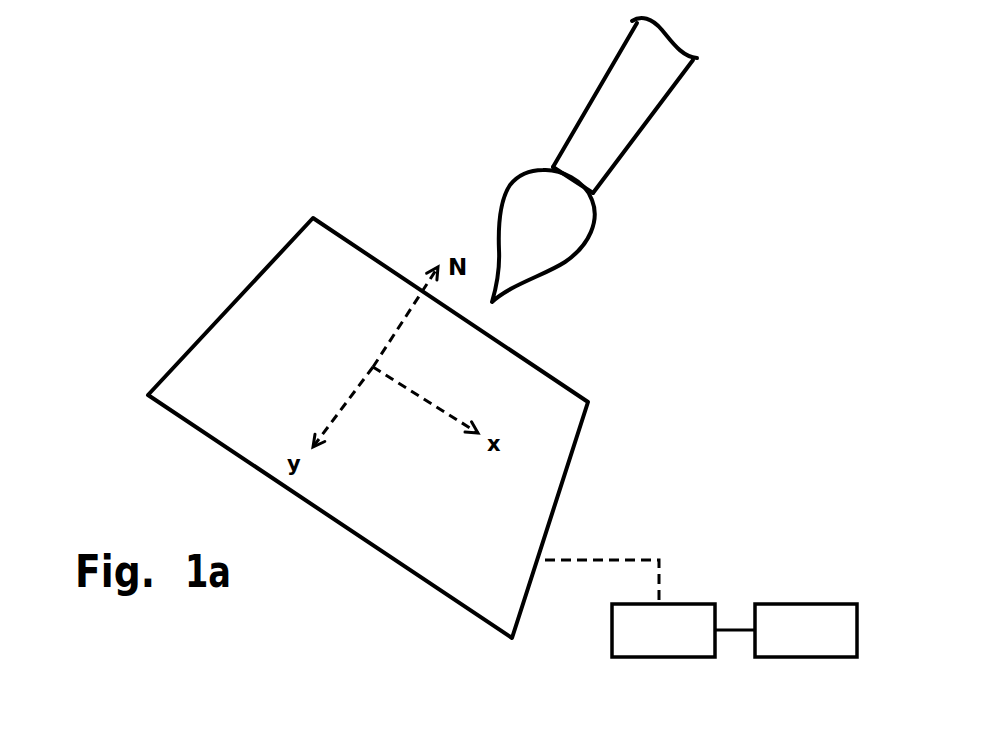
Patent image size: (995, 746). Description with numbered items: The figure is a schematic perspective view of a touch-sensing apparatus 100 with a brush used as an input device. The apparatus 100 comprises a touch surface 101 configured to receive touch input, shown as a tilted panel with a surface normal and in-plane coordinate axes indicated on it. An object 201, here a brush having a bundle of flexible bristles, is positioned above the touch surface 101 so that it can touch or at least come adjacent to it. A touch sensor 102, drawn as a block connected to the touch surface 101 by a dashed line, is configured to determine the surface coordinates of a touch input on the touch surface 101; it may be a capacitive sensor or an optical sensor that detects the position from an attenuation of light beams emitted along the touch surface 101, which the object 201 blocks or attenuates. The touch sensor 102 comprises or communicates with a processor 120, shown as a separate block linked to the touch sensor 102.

The touch-sensing apparatus 100 is at (142, 142).
The touch surface 101 is at (198, 372).
The object 201 is at (552, 268).
The touch sensor 102 is at (630, 608).
The processor 120 is at (786, 630).